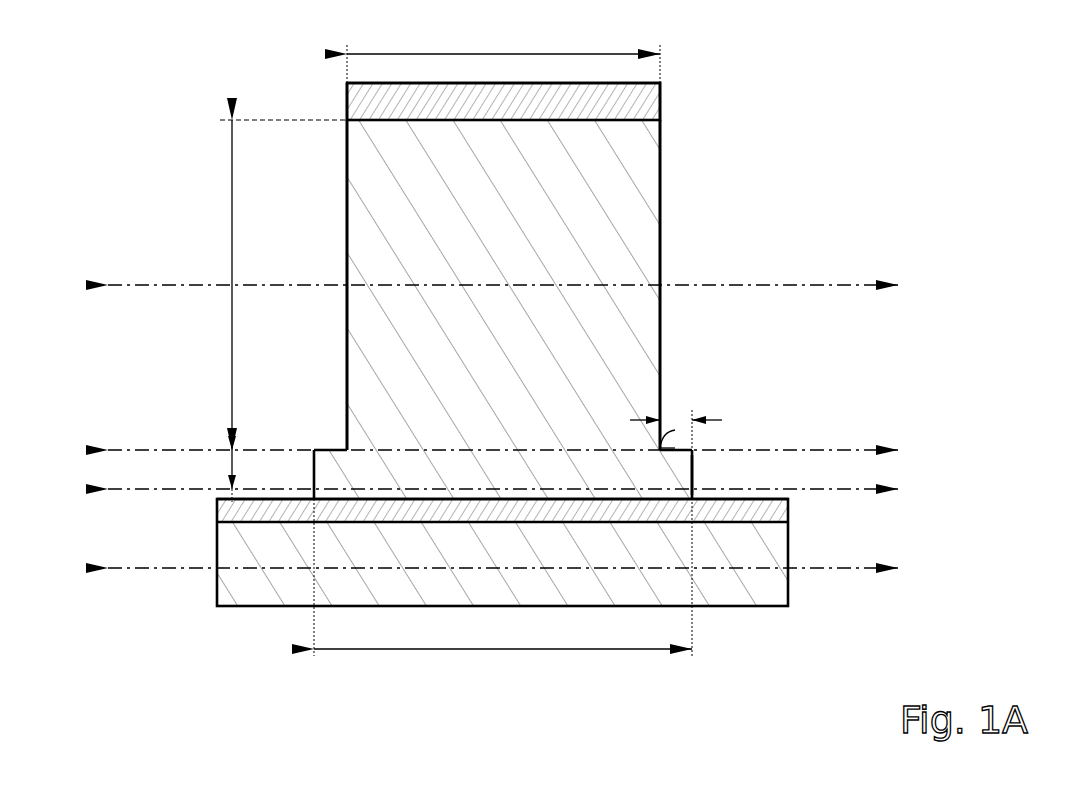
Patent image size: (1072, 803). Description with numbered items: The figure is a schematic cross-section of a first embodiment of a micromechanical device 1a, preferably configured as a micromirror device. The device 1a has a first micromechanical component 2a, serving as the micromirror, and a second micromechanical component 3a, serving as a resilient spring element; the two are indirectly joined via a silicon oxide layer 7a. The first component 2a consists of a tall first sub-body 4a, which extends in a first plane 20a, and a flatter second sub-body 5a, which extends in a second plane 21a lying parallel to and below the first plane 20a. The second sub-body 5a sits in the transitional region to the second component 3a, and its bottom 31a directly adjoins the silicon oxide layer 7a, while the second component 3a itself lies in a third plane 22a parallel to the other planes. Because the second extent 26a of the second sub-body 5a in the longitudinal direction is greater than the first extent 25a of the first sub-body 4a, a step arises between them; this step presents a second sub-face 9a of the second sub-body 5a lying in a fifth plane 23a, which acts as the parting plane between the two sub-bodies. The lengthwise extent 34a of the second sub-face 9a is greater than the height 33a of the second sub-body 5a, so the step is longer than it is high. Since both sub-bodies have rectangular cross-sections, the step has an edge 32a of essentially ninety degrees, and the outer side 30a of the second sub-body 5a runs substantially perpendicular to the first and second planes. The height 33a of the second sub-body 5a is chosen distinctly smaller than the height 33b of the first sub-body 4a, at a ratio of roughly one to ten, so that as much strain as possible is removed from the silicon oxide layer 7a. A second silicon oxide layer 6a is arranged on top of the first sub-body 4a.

The micromechanical device 1a is at (668, 188).
The first micromechanical component 2a is at (336, 188).
The second micromechanical component 3a is at (773, 548).
The first sub-body 4a is at (645, 226).
The second sub-body 5a is at (314, 468).
The second silicon oxide layer 6a is at (645, 103).
The silicon oxide layer 7a is at (773, 512).
The second sub-face 9a is at (676, 446).
The first plane 20a is at (864, 285).
The second plane 21a is at (864, 489).
The third plane 22a is at (864, 568).
The fifth plane 23a is at (864, 450).
The first extent 25a is at (502, 54).
The second extent 26a is at (503, 650).
The outer side 30a is at (692, 470).
The bottom 31a is at (568, 505).
The edge 32a is at (675, 430).
The height of the second sub-body 33a is at (232, 468).
The height of the first sub-body 33b is at (232, 203).
The lengthwise extent of the second sub-face 34a is at (675, 418).